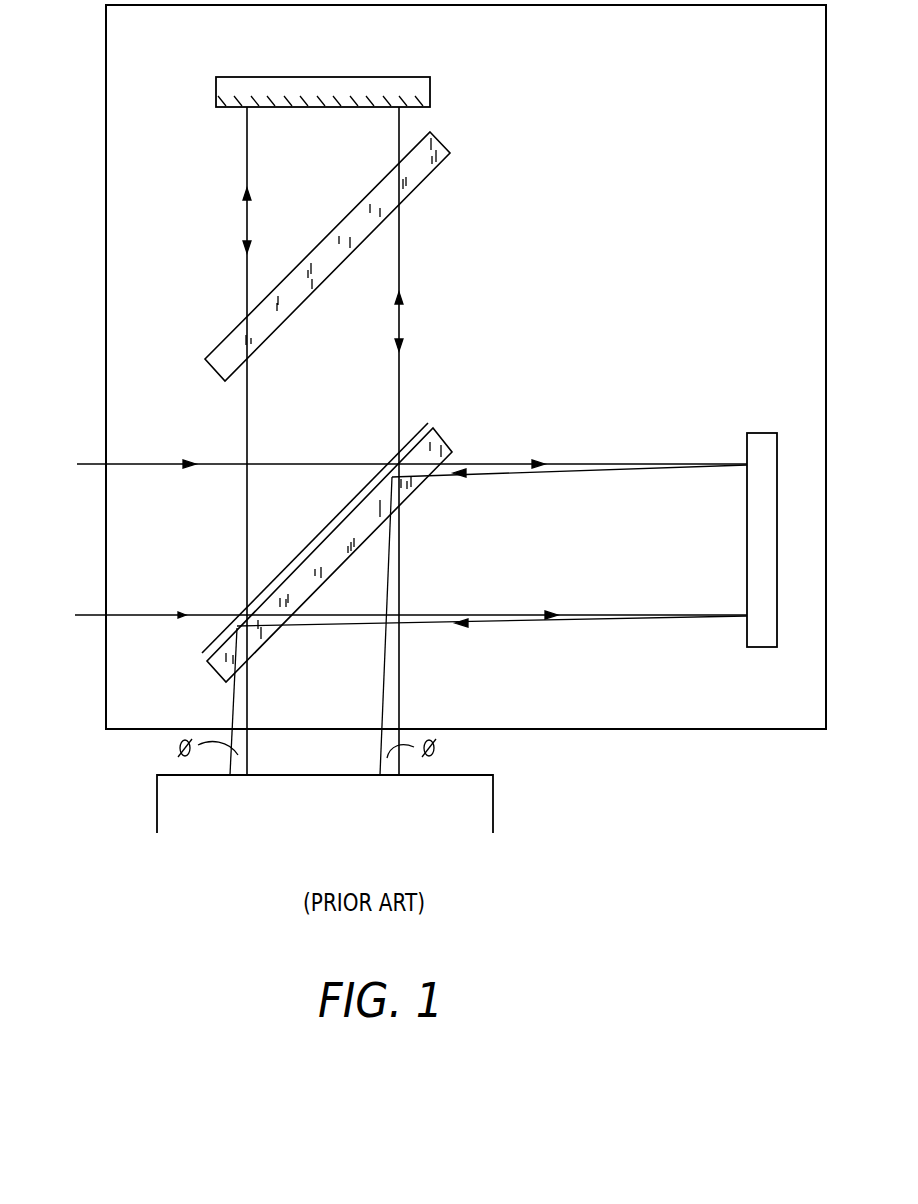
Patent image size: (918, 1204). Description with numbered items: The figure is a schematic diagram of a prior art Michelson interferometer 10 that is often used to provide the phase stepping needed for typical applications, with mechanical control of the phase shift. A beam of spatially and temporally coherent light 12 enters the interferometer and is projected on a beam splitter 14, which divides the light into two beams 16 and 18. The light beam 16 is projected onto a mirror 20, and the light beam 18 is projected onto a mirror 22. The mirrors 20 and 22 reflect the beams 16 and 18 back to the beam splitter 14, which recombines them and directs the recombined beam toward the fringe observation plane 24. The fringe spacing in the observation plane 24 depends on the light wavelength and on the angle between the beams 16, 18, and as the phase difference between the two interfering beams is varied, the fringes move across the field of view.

The Michelson interferometer 10 is at (62, 195).
The beam of spatially and temporally coherent light 12 is at (72, 459).
The beam splitter 14 is at (441, 436).
The light beam 16 is at (687, 466).
The light beam 18 is at (248, 407).
The mirror 20 is at (778, 519).
The mirror 22 is at (431, 93).
The fringe observation plane 24 is at (363, 776).